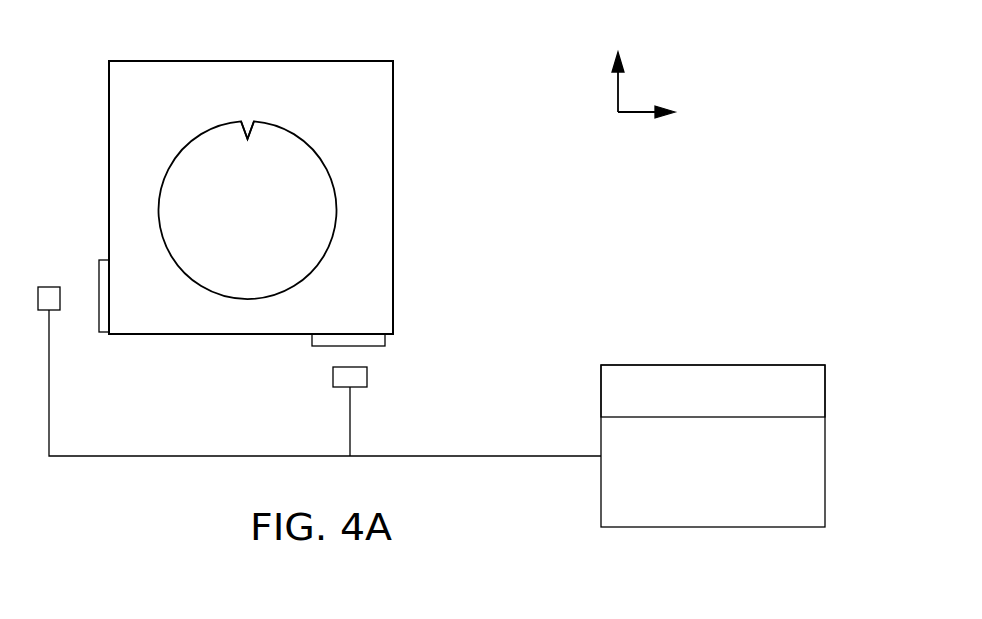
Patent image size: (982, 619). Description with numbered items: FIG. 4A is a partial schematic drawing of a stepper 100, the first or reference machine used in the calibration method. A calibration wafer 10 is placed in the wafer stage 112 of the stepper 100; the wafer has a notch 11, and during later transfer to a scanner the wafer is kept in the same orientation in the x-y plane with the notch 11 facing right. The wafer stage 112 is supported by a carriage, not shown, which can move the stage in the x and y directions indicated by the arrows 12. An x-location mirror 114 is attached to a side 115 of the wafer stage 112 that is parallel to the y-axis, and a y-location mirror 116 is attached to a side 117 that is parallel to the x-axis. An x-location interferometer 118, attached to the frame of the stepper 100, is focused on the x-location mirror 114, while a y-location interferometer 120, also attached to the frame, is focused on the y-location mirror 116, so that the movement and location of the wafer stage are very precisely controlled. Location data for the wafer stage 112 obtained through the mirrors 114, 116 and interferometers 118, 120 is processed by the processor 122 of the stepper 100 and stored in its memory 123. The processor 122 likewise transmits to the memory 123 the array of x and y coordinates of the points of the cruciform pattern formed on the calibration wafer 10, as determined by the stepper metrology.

The stepper 100 is at (427, 82).
The wafer stage 112 is at (393, 192).
The side 115 is at (109, 146).
The side 117 is at (240, 336).
The calibration wafer 10 is at (327, 165).
The notch 11 is at (247, 120).
The x-location mirror 114 is at (99, 327).
The y-location mirror 116 is at (318, 347).
The y-location interferometer 120 is at (368, 377).
The x-location interferometer 118 is at (43, 286).
The processor 122 is at (601, 485).
The memory 123 is at (601, 390).
The arrows 12 is at (634, 115).